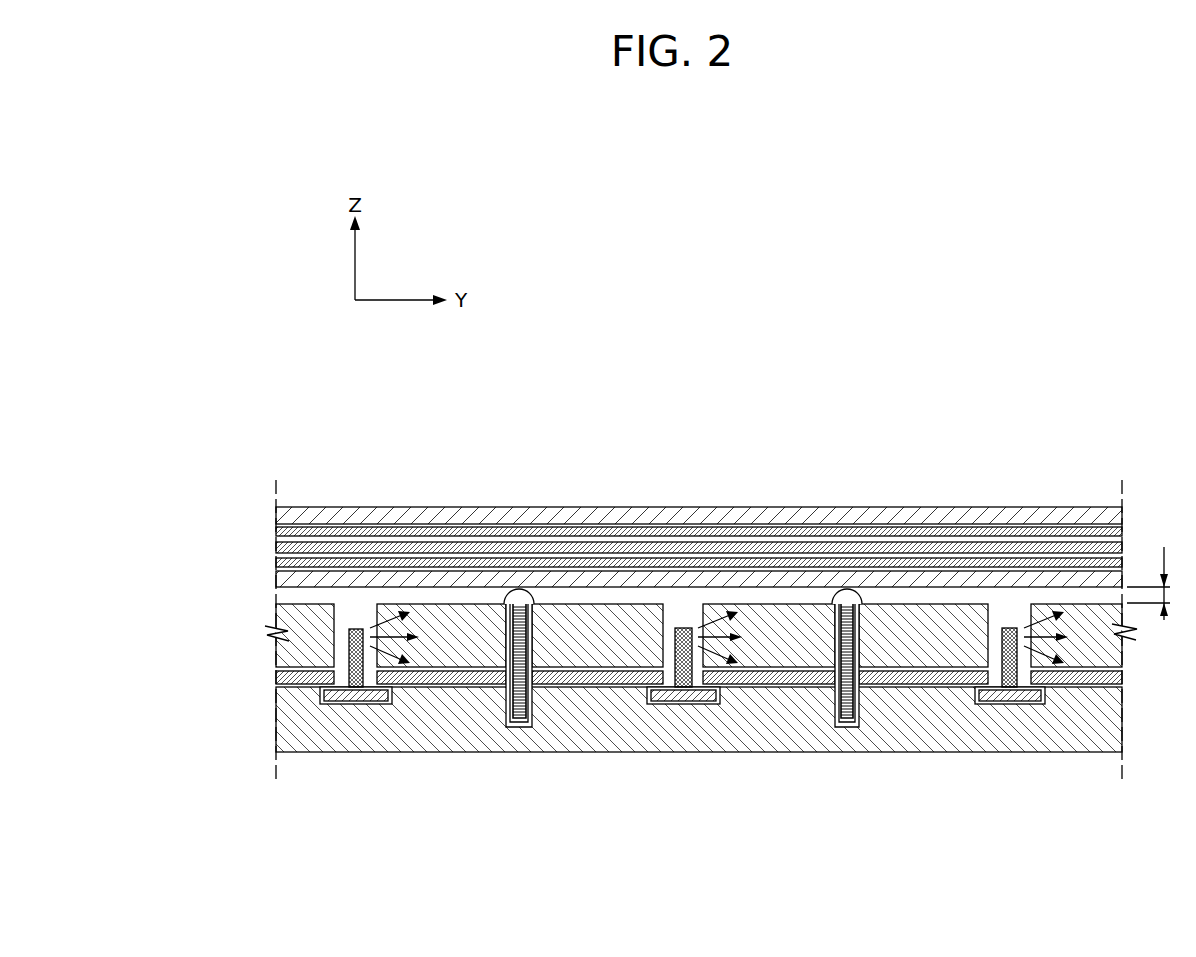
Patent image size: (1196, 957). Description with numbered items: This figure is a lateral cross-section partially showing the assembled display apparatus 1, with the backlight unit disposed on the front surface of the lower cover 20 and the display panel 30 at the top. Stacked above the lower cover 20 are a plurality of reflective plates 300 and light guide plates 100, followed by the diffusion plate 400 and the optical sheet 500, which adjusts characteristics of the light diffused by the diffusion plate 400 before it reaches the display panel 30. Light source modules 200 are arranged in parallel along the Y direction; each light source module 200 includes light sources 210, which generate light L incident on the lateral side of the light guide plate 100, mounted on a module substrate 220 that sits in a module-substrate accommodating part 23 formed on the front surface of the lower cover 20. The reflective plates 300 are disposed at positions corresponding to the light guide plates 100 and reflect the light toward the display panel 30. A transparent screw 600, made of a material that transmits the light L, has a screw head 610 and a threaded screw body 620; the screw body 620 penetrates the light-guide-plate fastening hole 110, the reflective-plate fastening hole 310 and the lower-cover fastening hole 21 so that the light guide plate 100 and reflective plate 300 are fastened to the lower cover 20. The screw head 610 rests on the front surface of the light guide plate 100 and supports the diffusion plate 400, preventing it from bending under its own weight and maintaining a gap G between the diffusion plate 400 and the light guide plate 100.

The display apparatus 1 is at (1016, 393).
The lower cover 20 is at (327, 732).
The lower-cover fastening hole 21 is at (843, 707).
The module-substrate accommodating part 23 is at (377, 705).
The display panel 30 is at (330, 507).
The light guide plate 100 is at (517, 630).
The light-guide-plate fastening hole 110 is at (852, 603).
The light source module 200 is at (625, 657).
The light source 210 is at (352, 640).
The module substrate 220 is at (320, 698).
The reflective plate 300 is at (437, 678).
The reflective-plate fastening hole 310 is at (855, 708).
The diffusion plate 400 is at (287, 580).
The optical sheet 500 is at (285, 562).
The transparent screw 600 is at (517, 609).
The screw head 610 is at (523, 597).
The screw body 620 is at (510, 637).